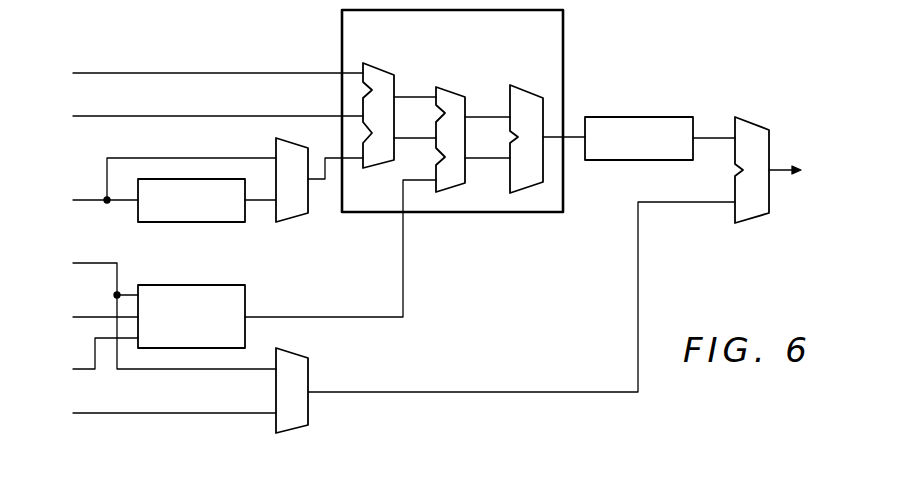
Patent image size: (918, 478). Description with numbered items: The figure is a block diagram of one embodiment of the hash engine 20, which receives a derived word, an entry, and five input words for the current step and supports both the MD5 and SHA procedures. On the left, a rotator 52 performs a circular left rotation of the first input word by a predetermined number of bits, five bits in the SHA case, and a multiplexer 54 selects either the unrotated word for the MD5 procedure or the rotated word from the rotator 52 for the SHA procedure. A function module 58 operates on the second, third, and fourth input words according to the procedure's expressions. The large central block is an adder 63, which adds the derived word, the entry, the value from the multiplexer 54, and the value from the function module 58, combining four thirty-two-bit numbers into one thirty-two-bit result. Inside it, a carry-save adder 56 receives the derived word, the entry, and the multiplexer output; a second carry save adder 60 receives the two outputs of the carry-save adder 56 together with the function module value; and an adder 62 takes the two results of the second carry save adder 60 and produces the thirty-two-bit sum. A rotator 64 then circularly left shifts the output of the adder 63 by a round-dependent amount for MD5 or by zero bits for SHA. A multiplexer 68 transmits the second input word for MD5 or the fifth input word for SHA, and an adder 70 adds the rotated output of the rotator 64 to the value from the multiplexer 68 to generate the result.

The hash engine 20 is at (472, 222).
The rotator 52 is at (168, 222).
The multiplexer 54 is at (295, 222).
The carry-save adder 56 is at (380, 63).
The function module 58 is at (213, 285).
The second carry save adder 60 is at (450, 87).
The adder 62 is at (525, 85).
The adder 63 is at (452, 142).
The rotator 64 is at (638, 117).
The multiplexer 68 is at (309, 408).
The adder 70 is at (752, 117).